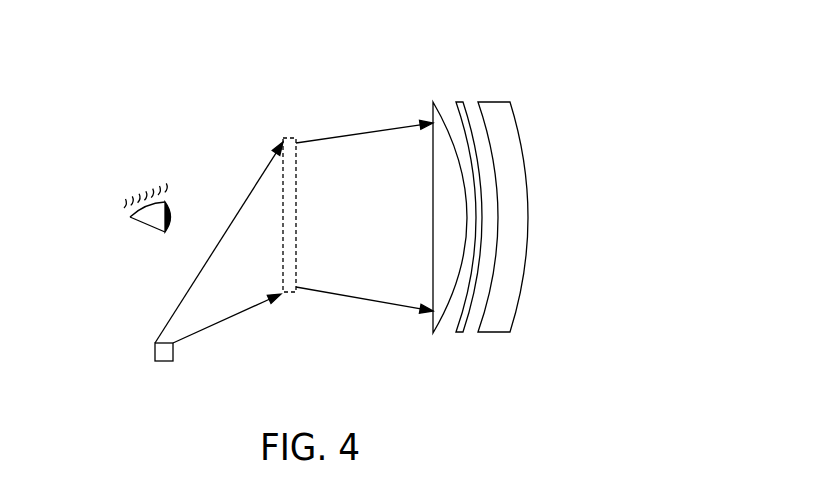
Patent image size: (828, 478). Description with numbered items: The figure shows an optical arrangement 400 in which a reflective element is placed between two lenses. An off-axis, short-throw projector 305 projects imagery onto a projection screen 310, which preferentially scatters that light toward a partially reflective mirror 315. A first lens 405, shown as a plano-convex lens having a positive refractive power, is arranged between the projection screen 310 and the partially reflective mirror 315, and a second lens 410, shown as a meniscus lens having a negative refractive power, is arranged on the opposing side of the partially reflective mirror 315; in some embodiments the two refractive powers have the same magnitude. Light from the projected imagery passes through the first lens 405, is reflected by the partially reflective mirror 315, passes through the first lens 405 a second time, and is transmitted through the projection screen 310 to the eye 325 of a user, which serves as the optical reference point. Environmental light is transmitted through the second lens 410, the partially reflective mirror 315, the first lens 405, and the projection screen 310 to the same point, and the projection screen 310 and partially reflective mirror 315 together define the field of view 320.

The optical arrangement 400 is at (598, 82).
The field of view 320 is at (570, 223).
The eye 325 is at (148, 232).
The projector 305 is at (173, 352).
The projection screen 310 is at (290, 292).
The first lens 405 is at (436, 333).
The partially reflective mirror 315 is at (459, 333).
The second lens 410 is at (498, 333).